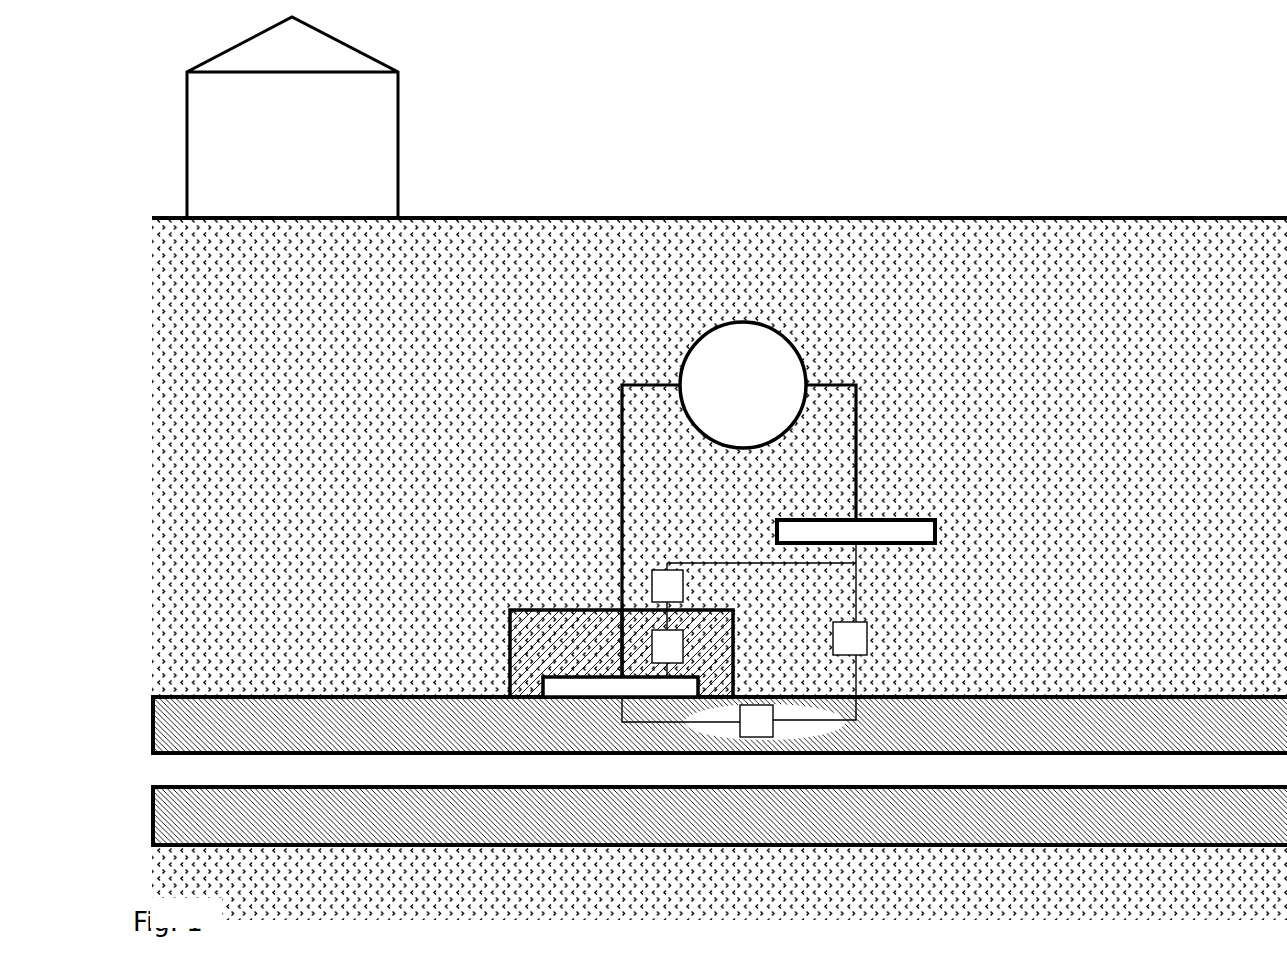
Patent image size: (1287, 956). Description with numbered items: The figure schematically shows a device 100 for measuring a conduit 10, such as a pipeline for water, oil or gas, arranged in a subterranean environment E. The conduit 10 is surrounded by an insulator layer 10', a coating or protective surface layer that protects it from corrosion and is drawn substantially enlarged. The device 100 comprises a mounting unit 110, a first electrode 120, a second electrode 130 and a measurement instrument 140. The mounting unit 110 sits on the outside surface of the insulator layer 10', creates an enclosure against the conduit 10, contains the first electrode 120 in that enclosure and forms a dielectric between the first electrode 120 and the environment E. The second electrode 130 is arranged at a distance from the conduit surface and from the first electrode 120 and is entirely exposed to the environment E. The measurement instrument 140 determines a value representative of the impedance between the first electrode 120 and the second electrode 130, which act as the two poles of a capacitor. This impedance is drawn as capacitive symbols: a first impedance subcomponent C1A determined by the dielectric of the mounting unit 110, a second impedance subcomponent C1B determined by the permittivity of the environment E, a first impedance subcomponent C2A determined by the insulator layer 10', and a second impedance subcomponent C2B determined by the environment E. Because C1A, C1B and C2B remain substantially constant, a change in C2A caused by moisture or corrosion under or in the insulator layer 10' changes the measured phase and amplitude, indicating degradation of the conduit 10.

The conduit 10 is at (687, 752).
The insulator layer 10' is at (687, 680).
The device for measuring a conduit 100 is at (530, 342).
The mounting unit 110 is at (552, 632).
The first electrode 120 is at (560, 688).
The second electrode 130 is at (937, 533).
The measurement instrument 140 is at (743, 385).
The first impedance subcomponent of the first impedance component C1A is at (650, 648).
The second impedance subcomponent of the first impedance component C1B is at (650, 585).
The first impedance subcomponent of the second impedance component C2A is at (780, 720).
The second impedance subcomponent of the second impedance component C2B is at (868, 638).
The environment E is at (718, 573).